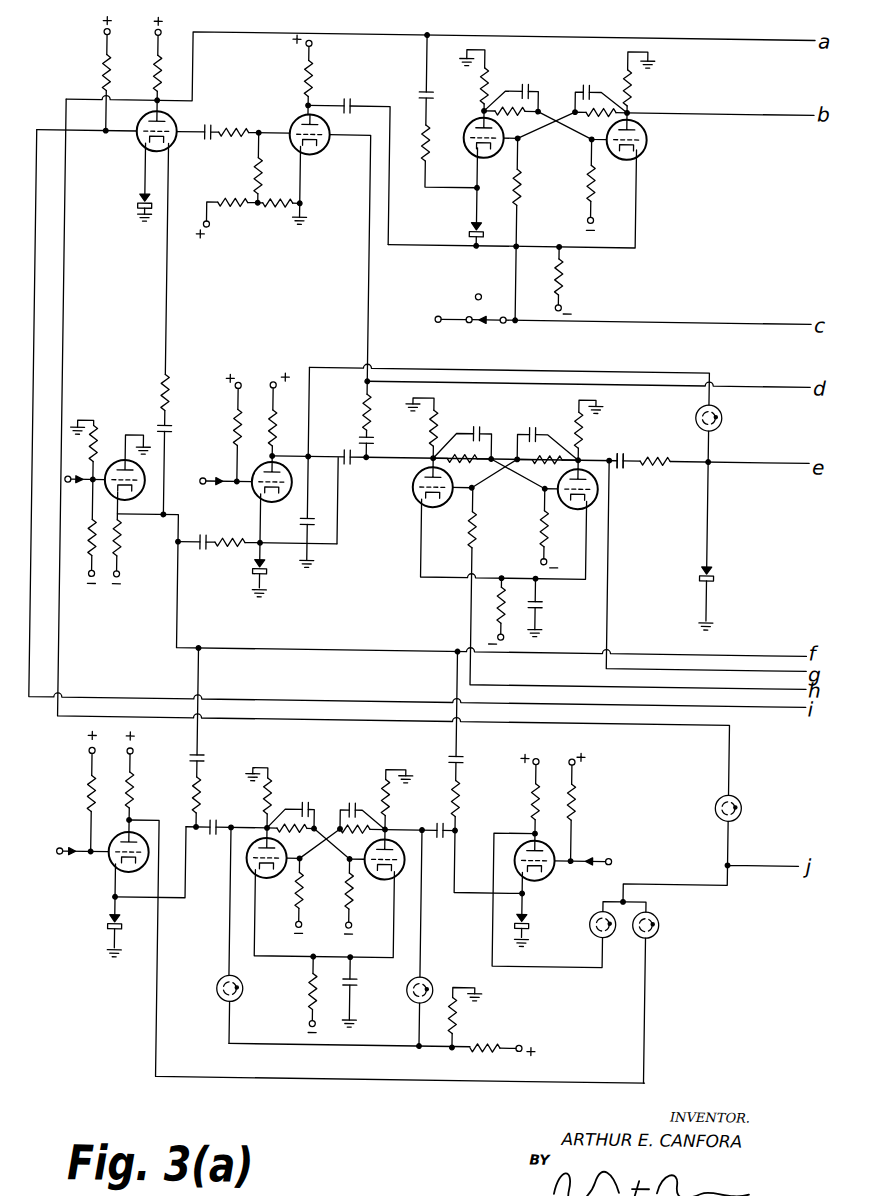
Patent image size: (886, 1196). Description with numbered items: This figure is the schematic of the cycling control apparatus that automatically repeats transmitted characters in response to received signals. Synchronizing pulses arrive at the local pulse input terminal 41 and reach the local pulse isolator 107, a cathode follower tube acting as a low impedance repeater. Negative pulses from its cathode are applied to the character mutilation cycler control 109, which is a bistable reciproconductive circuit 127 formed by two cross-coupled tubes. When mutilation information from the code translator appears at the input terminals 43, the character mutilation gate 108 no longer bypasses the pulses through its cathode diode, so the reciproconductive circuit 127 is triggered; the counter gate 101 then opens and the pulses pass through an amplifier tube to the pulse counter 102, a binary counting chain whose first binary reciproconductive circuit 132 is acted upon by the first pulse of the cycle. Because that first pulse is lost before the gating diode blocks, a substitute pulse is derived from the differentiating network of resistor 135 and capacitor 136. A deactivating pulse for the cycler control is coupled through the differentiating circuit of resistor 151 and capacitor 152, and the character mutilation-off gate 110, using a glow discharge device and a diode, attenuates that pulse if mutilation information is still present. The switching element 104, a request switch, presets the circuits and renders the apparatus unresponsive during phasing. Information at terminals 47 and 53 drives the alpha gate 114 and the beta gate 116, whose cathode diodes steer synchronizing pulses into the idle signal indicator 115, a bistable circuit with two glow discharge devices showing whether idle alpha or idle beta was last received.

The counter gate 101 is at (142, 51).
The pulse counter 102 is at (787, 93).
The switching element 104 is at (470, 290).
The local pulse isolator 107 is at (118, 405).
The character mutilation gate 108 is at (261, 368).
The character mutilation cycler control 109 is at (522, 423).
The character mutilation-off gate 110 is at (790, 442).
The alpha gate 114 is at (172, 776).
The idle signal indicator 115 is at (345, 780).
The beta gate 116 is at (574, 759).
The bistable reciproconductive circuit 127 is at (523, 514).
The first binary reciproconductive circuit 132 is at (565, 165).
The resistor 135 is at (360, 405).
The capacitor 136 is at (377, 441).
The resistor 151 is at (672, 456).
The capacitor 152 is at (622, 450).
The local pulse input terminal 41 is at (66, 485).
The input terminals 43 is at (201, 483).
The terminal 47 is at (66, 859).
The terminal 53 is at (584, 836).